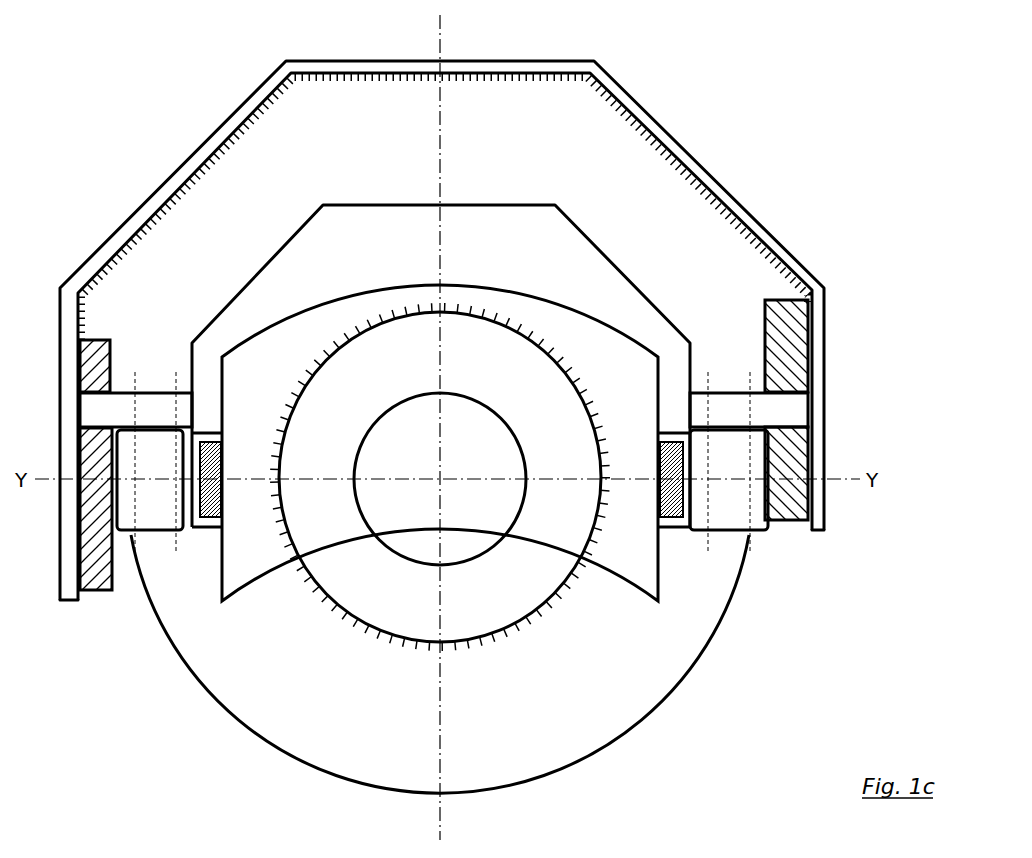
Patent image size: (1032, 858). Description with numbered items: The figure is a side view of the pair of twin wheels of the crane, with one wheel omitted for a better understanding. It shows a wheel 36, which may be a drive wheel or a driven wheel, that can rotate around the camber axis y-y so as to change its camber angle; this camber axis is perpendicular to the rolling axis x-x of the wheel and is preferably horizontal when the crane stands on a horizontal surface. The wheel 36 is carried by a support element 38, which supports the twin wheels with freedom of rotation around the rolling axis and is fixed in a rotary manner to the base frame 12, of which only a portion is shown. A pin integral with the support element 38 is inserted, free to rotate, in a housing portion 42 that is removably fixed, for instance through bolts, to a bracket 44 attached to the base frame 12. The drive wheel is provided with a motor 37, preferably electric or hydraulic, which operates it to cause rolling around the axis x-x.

The base frame 12 is at (718, 167).
The twin wheel 36 is at (508, 746).
The motor 37 is at (392, 384).
The support element 38 is at (270, 384).
The housing portion 42 is at (165, 507).
The bracket 44 is at (153, 391).